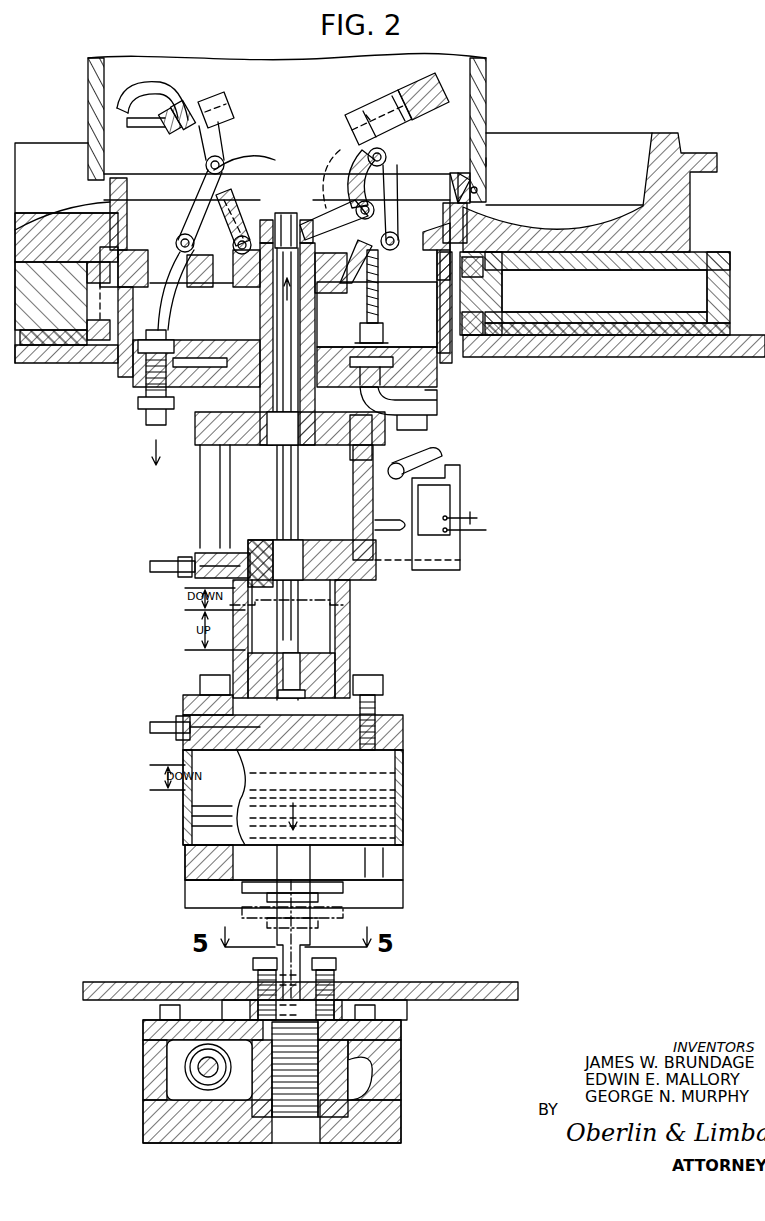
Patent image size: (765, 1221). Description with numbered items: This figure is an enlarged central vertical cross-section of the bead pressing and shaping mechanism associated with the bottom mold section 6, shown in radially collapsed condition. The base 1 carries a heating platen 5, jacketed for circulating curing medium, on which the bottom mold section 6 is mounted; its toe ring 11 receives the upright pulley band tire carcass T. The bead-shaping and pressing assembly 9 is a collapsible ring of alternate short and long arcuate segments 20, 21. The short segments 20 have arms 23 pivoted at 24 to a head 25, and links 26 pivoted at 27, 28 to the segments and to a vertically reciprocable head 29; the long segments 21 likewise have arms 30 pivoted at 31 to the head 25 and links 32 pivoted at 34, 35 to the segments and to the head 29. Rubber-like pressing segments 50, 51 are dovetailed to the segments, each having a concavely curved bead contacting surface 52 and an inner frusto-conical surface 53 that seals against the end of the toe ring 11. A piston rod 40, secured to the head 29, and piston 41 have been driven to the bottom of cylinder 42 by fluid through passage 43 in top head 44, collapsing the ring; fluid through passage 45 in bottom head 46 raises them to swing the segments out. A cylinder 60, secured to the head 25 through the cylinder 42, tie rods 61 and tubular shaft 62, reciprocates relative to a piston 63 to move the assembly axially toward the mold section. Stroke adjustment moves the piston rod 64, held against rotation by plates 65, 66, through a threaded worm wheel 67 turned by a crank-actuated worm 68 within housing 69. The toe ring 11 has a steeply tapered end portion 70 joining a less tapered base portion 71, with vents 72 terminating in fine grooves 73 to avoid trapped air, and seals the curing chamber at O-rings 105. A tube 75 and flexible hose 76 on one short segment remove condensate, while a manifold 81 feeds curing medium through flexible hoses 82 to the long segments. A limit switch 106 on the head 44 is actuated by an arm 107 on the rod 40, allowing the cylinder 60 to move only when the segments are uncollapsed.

The pulley band tire carcass T is at (488, 94).
The base 1 is at (481, 975).
The heating platen 5 is at (757, 328).
The bottom mold section 6 is at (690, 212).
The bead-shaping and pressing assembly 9 is at (359, 105).
The toe ring 11 is at (443, 173).
The short arcuate segments 20 is at (205, 104).
The long arcuate segments 21 is at (392, 110).
The arms 23 is at (198, 170).
The pivotal connection 24 is at (181, 252).
The head 25 is at (243, 272).
The links 26 is at (228, 206).
The pivotal connection 27 is at (258, 158).
The pivotal connection 28 is at (270, 210).
The vertically reciprocable head 29 is at (306, 219).
The arms 30 is at (398, 165).
The pivotal connection 31 is at (394, 248).
The links 32 is at (366, 187).
The pivotal connection 34 is at (368, 151).
The pivotal connection 35 is at (355, 197).
The piston rod 40 is at (277, 320).
The piston 41 is at (270, 653).
The cylinder 42 is at (350, 615).
The passage 43 is at (217, 562).
The top head 44 is at (343, 548).
The passage 45 is at (196, 742).
The bottom head 46 is at (185, 718).
The short arcuate bead-shaping and pressing segments 50 is at (163, 122).
The long arcuate bead-shaping and pressing segments 51 is at (428, 118).
The concavely curved bead contacting surface 52 is at (168, 128).
The inner frusto-conical surface 53 is at (198, 128).
The cylinder 60 is at (402, 783).
The tie rods 61 is at (203, 488).
The tubular shaft 62 is at (256, 400).
The piston 63 is at (198, 832).
The piston rod 64 is at (311, 933).
The plate 65 is at (338, 980).
The plate 66 is at (250, 982).
The worm wheel 67 is at (364, 1074).
The worm 68 is at (200, 1078).
The housing 69 is at (403, 1124).
The end portion 70 is at (117, 178).
The base portion 71 is at (486, 193).
The vents 72 is at (466, 216).
The grooves 73 is at (480, 178).
The tube 75 is at (172, 96).
The flexible hose 76 is at (160, 318).
The manifold 81 is at (385, 360).
The flexible hoses 82 is at (380, 296).
The O-rings 105 is at (428, 233).
The limit switch 106 is at (462, 503).
The arm 107 is at (396, 523).